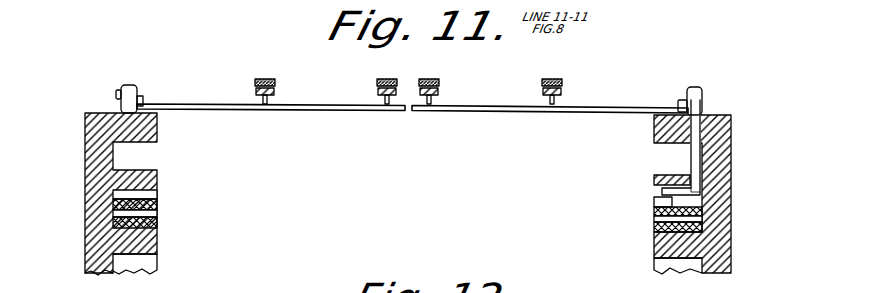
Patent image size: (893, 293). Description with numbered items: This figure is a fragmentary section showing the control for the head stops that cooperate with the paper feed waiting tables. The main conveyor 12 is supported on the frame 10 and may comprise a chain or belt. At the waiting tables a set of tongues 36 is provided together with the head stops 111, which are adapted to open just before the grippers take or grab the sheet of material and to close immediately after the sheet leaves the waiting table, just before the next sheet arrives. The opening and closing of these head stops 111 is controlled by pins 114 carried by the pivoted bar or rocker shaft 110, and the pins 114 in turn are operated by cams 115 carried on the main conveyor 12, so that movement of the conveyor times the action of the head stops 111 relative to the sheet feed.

The frame 10 is at (85, 231).
The main conveyor 12 is at (215, 257).
The tongues 36 is at (256, 82).
The pivoted bar or rocker shaft 110 is at (133, 86).
The head stops 111 is at (385, 98).
The pins 114 is at (694, 162).
The cams 115 is at (654, 200).